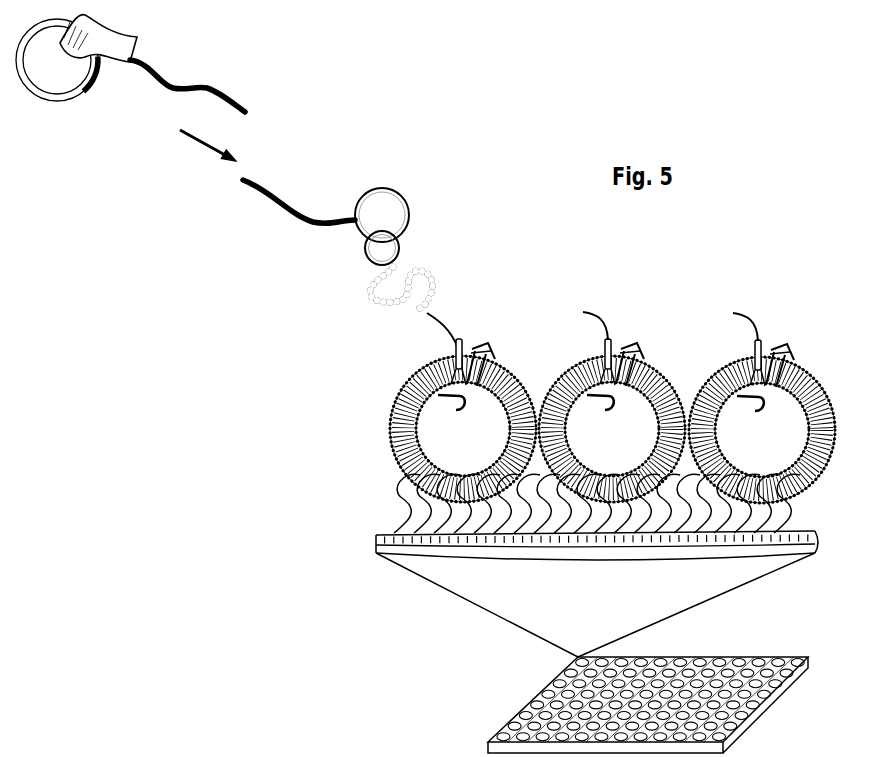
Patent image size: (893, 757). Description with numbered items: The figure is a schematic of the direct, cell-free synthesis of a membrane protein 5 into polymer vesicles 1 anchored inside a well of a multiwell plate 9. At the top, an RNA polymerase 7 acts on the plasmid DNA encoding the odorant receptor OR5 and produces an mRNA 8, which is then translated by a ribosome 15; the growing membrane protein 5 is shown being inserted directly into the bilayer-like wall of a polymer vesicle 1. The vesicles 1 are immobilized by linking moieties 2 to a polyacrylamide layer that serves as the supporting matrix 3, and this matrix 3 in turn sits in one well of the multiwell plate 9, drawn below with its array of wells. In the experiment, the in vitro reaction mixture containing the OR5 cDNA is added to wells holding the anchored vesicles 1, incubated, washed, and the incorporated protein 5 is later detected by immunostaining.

The polymer vesicles 1 is at (388, 418).
The linking moieties 2 is at (382, 495).
The polyacrylamide supporting matrix 3 is at (376, 540).
The membrane protein 5 is at (616, 357).
The RNA polymerase 7 is at (130, 63).
The mRNA 8 is at (197, 130).
The multiwell plate 9 is at (648, 705).
The ribosome 15 is at (350, 264).